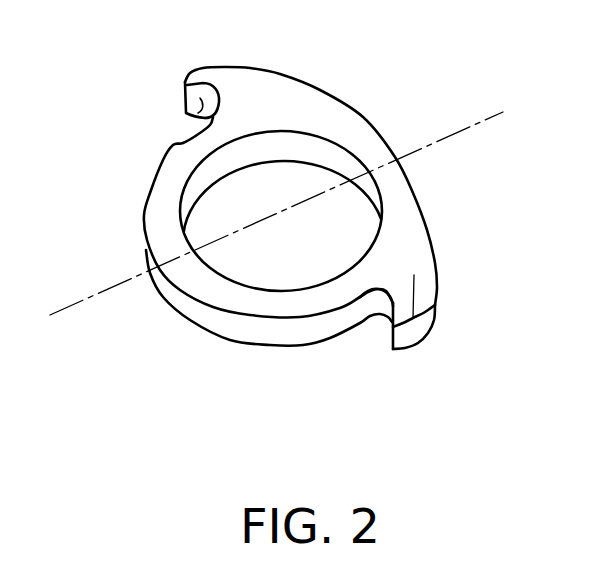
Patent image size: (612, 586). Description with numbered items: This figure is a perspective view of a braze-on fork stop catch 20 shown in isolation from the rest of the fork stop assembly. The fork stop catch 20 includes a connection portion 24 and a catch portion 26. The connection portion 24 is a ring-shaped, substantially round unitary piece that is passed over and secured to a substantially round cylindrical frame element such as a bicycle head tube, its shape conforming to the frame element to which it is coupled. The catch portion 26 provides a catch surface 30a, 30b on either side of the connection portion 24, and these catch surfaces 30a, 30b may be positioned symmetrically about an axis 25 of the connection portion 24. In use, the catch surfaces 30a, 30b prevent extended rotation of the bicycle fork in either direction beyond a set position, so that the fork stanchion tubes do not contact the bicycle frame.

The fork stop catch 20 is at (397, 140).
The connection portion 24 is at (267, 300).
The axis 25 is at (465, 130).
The catch portion 26 is at (196, 72).
The catch surface 30a is at (207, 103).
The catch surface 30b is at (381, 297).